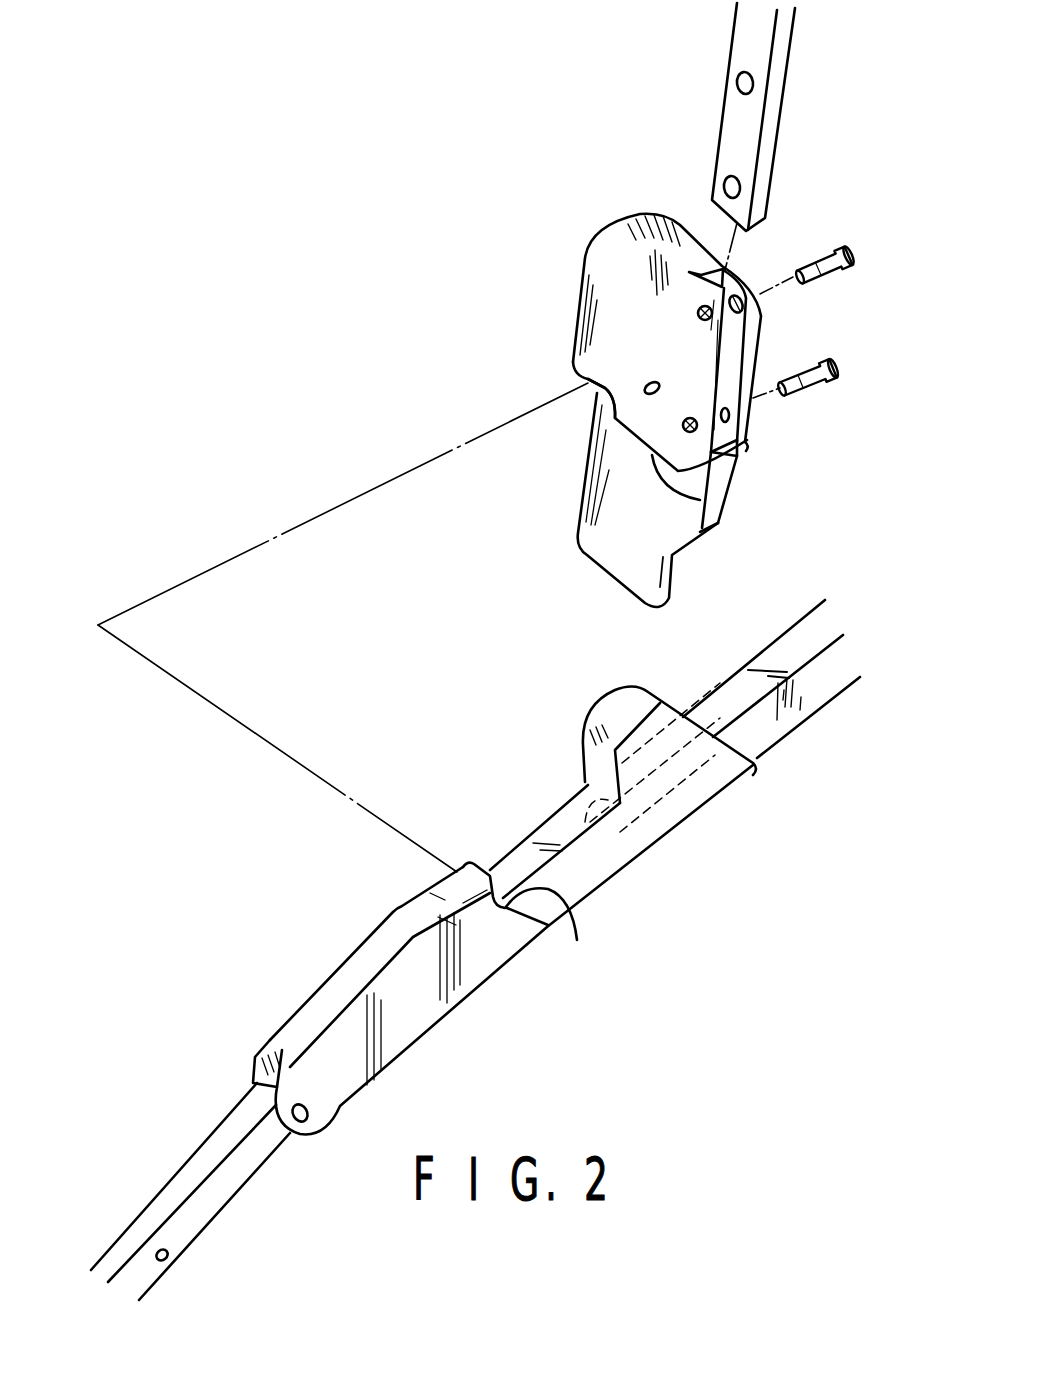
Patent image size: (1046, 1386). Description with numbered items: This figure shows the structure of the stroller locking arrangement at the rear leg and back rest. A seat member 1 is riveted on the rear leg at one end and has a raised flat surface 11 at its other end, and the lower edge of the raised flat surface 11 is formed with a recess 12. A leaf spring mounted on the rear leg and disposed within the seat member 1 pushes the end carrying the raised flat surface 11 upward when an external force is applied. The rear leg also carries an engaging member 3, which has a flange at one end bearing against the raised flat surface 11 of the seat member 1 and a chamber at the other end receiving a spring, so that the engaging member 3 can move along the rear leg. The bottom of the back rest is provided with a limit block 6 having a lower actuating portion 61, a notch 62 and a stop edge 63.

The seat member 1 is at (417, 1020).
The raised flat surface 11 is at (463, 905).
The recess 12 is at (560, 913).
The engaging member 3 is at (673, 817).
The limit block 6 is at (600, 267).
The lower actuating portion 61 is at (607, 546).
The notch 62 is at (590, 386).
The stop edge 63 is at (700, 500).